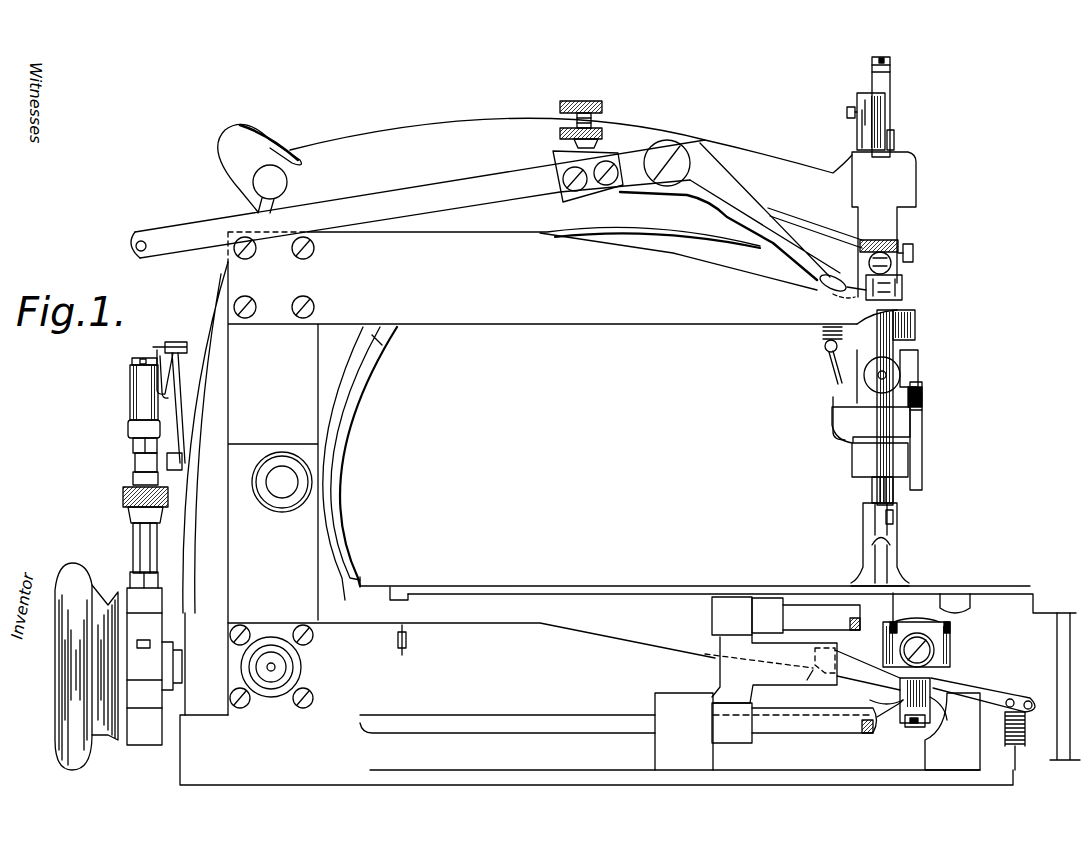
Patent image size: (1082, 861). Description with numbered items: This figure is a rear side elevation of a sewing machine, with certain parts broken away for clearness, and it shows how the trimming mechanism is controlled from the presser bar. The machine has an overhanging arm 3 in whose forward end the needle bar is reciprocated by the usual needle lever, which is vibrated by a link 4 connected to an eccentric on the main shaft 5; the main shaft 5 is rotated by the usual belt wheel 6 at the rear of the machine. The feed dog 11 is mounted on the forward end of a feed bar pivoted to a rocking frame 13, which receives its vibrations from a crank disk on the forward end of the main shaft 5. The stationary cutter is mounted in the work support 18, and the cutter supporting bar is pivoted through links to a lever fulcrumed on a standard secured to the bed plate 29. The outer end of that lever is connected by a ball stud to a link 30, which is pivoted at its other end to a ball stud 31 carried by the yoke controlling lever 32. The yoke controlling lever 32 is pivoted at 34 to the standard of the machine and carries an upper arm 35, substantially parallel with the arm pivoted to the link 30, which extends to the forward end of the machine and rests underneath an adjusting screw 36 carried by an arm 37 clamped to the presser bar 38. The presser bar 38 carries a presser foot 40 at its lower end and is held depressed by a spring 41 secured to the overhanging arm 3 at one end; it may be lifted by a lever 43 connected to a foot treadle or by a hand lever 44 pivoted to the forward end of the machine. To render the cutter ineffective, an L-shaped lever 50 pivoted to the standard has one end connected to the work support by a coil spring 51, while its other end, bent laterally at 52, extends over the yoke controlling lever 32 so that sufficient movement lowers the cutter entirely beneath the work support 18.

The overhanging arm 3 is at (757, 170).
The link 4 is at (135, 473).
The main shaft 5 is at (186, 642).
The belt wheel 6 is at (74, 580).
The feed dog 11 is at (853, 590).
The rocking frame 13 is at (770, 664).
The work support 18 is at (662, 588).
The bed plate 29 is at (731, 731).
The link 30 is at (925, 668).
The ball stud 31 is at (930, 697).
The yoke controlling lever 32 is at (507, 693).
The pivot 34 is at (290, 482).
The upper arm 35 is at (602, 258).
The adjusting screw 36 is at (899, 247).
The arm 37 is at (902, 288).
The presser bar 38 is at (872, 490).
The presser foot 40 is at (900, 585).
The spring 41 is at (812, 232).
The lever 43 is at (681, 169).
The hand lever 44 is at (922, 466).
The L-shaped lever 50 is at (867, 667).
The coil spring 51 is at (1025, 722).
The laterally bent end 52 is at (812, 672).